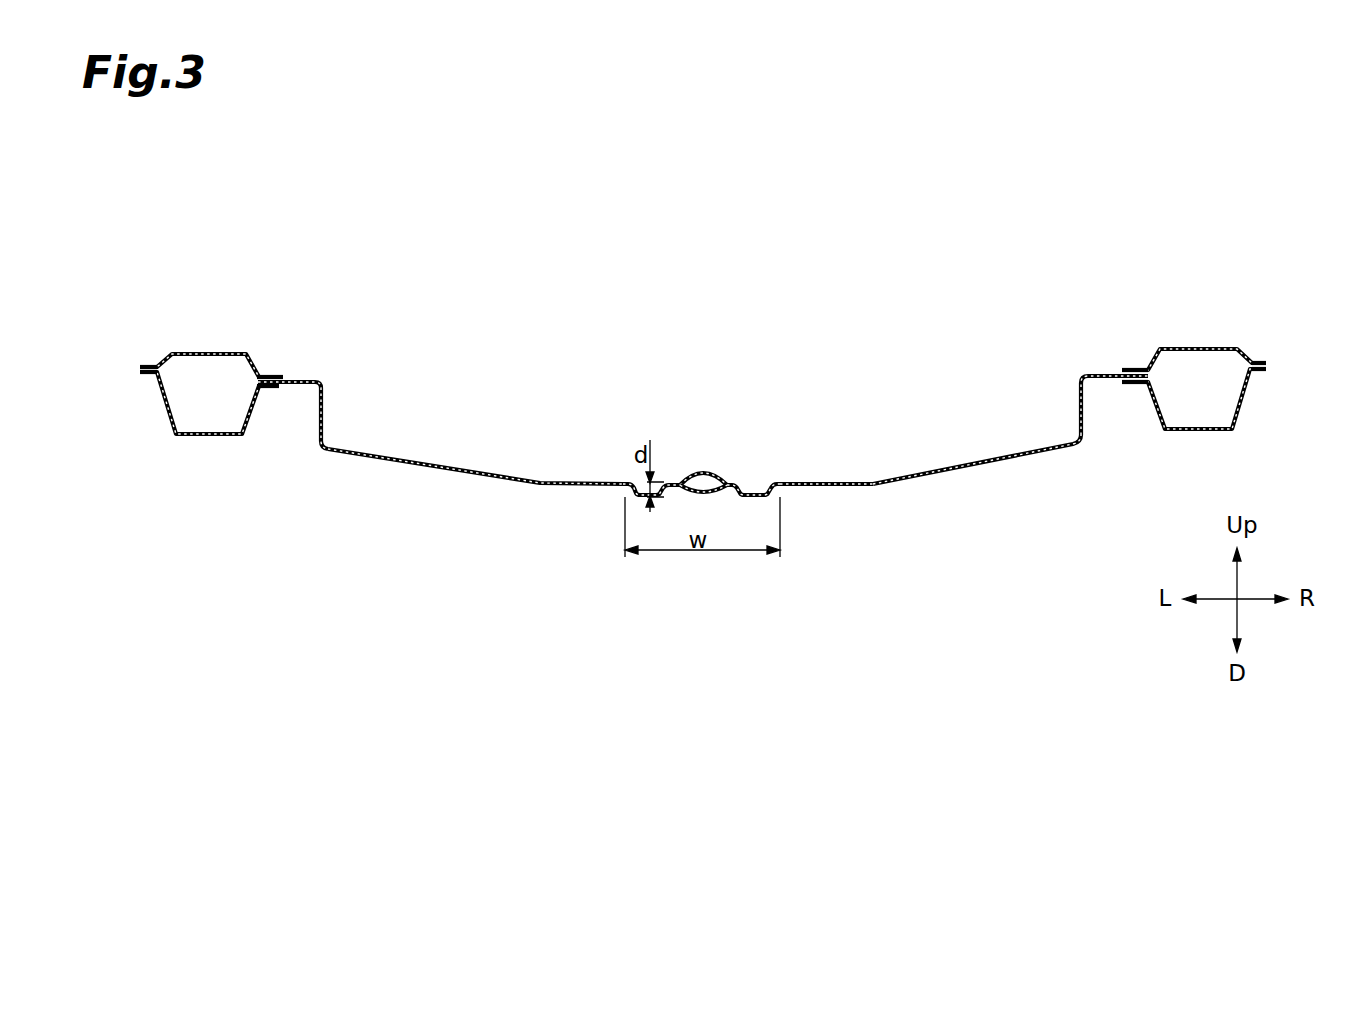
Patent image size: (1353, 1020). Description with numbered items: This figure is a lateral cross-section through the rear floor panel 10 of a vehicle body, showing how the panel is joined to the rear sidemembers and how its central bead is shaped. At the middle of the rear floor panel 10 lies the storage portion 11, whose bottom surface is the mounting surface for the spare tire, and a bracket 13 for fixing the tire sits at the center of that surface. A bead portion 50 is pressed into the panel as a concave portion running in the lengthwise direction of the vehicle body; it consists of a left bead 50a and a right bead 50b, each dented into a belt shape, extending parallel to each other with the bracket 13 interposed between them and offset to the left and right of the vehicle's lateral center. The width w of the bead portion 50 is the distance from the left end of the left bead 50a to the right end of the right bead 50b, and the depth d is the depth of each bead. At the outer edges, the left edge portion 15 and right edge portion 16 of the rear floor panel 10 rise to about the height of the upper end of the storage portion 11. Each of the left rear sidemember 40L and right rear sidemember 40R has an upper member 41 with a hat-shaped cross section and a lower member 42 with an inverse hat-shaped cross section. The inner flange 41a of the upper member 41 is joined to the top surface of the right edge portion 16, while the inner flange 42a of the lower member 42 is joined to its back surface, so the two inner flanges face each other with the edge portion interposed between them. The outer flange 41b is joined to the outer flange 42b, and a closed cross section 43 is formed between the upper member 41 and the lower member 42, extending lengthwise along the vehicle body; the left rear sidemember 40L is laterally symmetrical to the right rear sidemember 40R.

The rear floor panel 10 is at (906, 469).
The storage portion 11 is at (828, 482).
The bracket 13 is at (703, 473).
The left edge portion 15 is at (293, 377).
The right edge portion 16 is at (1103, 375).
The left rear sidemember 40L is at (705, 343).
The right rear sidemember 40R is at (1245, 243).
The upper member 41 is at (252, 352).
The inner flange 41a is at (268, 373).
The outer flange 41b is at (148, 367).
The lower member 42 is at (247, 403).
The inner flange 42a is at (268, 387).
The outer flange 42b is at (145, 375).
The closed cross section 43 is at (219, 401).
The bead portion 50 is at (701, 420).
The left bead 50a is at (662, 493).
The right bead 50b is at (757, 493).